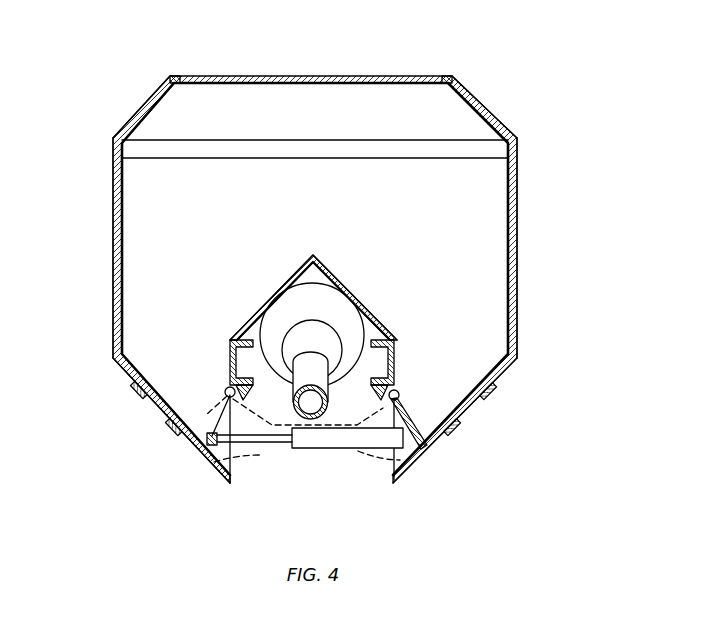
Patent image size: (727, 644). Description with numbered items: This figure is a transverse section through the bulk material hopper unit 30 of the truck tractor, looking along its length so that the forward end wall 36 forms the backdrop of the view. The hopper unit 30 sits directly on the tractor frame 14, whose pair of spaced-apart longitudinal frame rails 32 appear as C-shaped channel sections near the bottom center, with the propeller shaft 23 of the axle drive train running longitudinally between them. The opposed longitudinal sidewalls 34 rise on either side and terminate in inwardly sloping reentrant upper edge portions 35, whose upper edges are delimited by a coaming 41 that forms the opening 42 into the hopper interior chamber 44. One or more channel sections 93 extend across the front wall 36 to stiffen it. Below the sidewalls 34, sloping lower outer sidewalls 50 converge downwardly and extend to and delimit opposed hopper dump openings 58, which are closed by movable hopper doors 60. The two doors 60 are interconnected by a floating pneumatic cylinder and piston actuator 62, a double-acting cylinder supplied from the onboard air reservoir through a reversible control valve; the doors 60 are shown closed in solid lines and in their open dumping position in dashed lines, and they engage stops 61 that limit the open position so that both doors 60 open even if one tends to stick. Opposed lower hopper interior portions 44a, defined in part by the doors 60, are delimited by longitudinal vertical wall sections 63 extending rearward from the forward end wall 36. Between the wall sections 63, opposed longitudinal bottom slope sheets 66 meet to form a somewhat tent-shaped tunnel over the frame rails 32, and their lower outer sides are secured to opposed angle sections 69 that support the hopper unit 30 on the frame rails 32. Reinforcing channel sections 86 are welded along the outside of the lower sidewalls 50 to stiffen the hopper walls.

The frame 14 is at (400, 339).
The propeller shaft 23 is at (330, 379).
The hopper unit 30 is at (518, 232).
The frame rails 32 is at (255, 357).
The sidewalls 34 is at (115, 265).
The reentrant upper edge portions 35 is at (138, 107).
The forward end wall 36 is at (134, 181).
The coaming 41 is at (456, 78).
The opening 42 is at (182, 78).
The hopper interior chamber 44 is at (289, 197).
The lower hopper interior portions 44a is at (138, 347).
The lower outer sidewalls 50 is at (124, 372).
The hopper dump openings 58 is at (243, 467).
The hopper doors 60 is at (221, 418).
The stops 61 is at (229, 387).
The pneumatic cylinder and piston actuator 62 is at (315, 450).
The vertical wall sections 63 is at (229, 351).
The bottom slope sheets 66 is at (289, 279).
The angle sections 69 is at (252, 318).
The channel sections 86 is at (136, 408).
The channel sections 93 is at (413, 148).